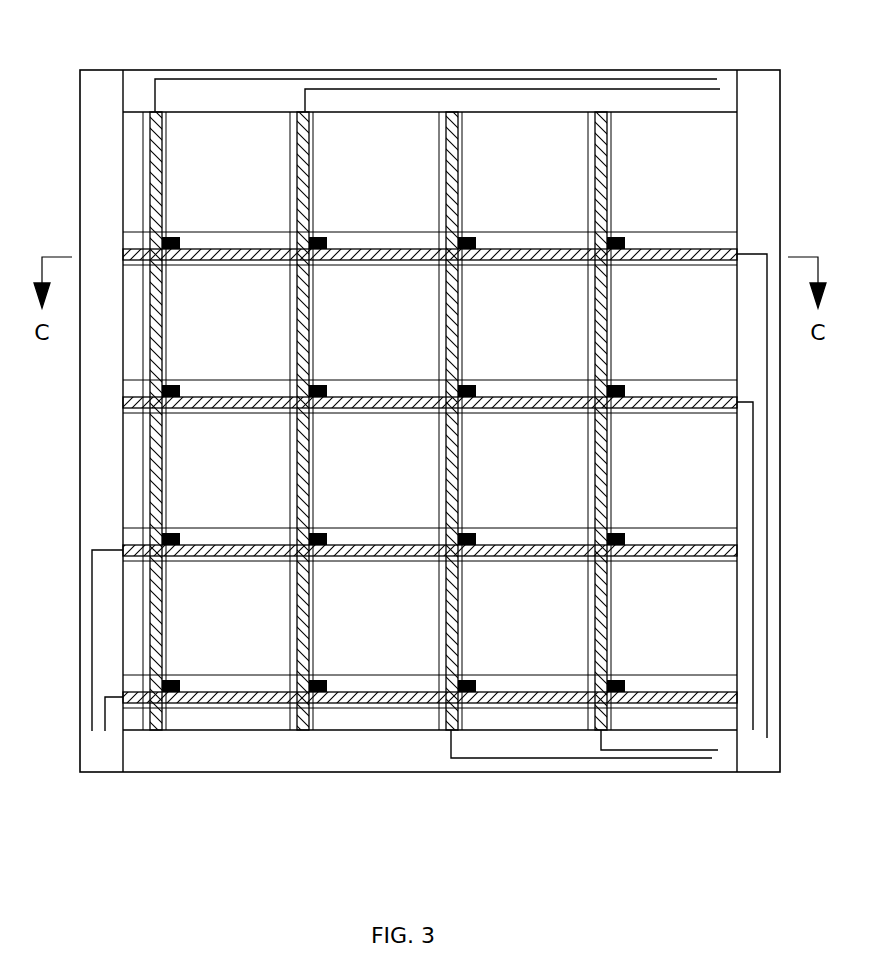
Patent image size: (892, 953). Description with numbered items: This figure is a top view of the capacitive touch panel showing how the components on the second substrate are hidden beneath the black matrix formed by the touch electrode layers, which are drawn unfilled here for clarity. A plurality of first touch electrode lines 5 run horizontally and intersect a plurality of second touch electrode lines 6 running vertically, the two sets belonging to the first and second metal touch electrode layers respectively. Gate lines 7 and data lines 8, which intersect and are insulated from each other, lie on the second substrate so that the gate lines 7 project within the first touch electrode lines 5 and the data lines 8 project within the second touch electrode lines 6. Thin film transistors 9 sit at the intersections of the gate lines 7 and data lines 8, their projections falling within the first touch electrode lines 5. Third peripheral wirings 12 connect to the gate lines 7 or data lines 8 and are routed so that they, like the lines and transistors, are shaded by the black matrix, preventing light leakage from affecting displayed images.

The first touch electrode lines 5 is at (545, 264).
The second touch electrode lines 6 is at (463, 223).
The gate lines 7 is at (487, 250).
The data lines 8 is at (450, 210).
The thin film transistors 9 is at (475, 240).
The third peripheral wirings 12 is at (43, 680).